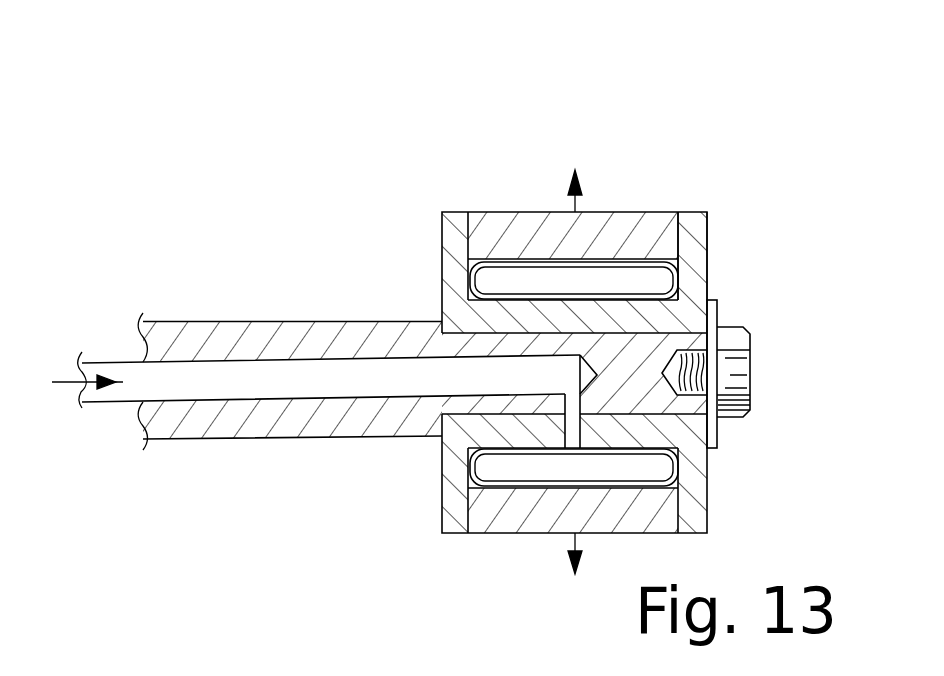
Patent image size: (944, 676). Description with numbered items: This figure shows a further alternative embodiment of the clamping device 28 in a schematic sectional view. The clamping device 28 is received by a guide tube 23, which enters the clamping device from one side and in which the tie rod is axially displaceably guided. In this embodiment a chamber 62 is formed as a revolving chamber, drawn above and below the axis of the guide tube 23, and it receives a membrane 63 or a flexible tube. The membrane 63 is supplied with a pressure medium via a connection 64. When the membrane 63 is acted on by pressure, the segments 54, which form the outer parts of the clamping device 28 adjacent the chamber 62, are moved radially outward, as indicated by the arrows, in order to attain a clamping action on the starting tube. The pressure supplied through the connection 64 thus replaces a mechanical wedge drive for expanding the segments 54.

The clamping device 28 is at (405, 183).
The guide tube 23 is at (337, 422).
The segments 54 is at (632, 230).
The membrane 63 is at (688, 240).
The chamber 62 is at (683, 270).
The connection 64 is at (577, 400).